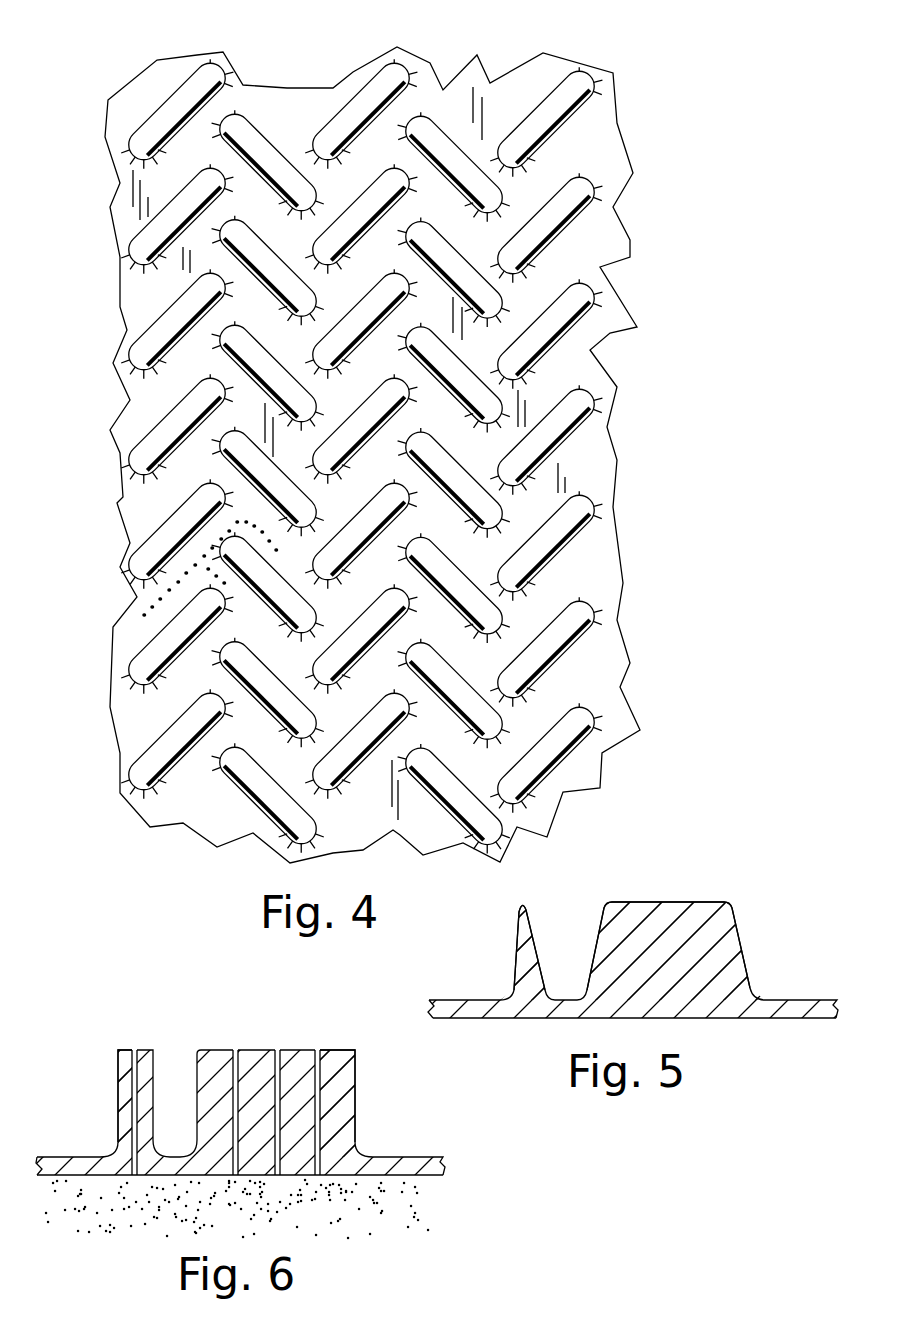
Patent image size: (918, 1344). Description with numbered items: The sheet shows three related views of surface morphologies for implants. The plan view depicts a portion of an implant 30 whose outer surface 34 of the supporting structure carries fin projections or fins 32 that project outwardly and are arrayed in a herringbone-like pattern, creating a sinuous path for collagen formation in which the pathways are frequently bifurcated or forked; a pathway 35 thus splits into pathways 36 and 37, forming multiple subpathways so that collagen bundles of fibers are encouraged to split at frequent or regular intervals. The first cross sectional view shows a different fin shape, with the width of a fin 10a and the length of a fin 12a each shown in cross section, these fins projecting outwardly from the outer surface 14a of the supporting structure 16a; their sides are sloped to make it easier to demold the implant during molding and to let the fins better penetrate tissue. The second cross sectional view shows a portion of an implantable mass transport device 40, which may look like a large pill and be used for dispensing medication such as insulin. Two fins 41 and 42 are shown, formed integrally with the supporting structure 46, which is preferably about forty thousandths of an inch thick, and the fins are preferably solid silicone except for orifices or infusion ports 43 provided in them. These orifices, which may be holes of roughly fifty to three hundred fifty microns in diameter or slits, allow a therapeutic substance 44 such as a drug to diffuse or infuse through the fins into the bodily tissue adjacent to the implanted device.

In FIG. 4, the implant 30 is at (424, 439).
In FIG. 4, the fin projections 32 is at (362, 98).
In FIG. 4, the outer surface 34 is at (597, 472).
In FIG. 4, the pathway 35 is at (152, 604).
In FIG. 4, the pathway 36 is at (232, 523).
In FIG. 4, the pathway 37 is at (153, 627).
In FIG. 5, the fin 10a is at (530, 905).
In FIG. 5, the fin 12a is at (670, 905).
In FIG. 5, the outer surface 14a is at (787, 1000).
In FIG. 5, the supporting structure 16a is at (768, 1010).
In FIG. 6, the mass transport device 40 is at (377, 1087).
In FIG. 6, the fin 41 is at (355, 1062).
In FIG. 6, the fin 42 is at (118, 1080).
In FIG. 6, the orifices 43 is at (135, 1050).
In FIG. 6, the therapeutic substance 44 is at (378, 1208).
In FIG. 6, the supporting structure 46 is at (443, 1172).